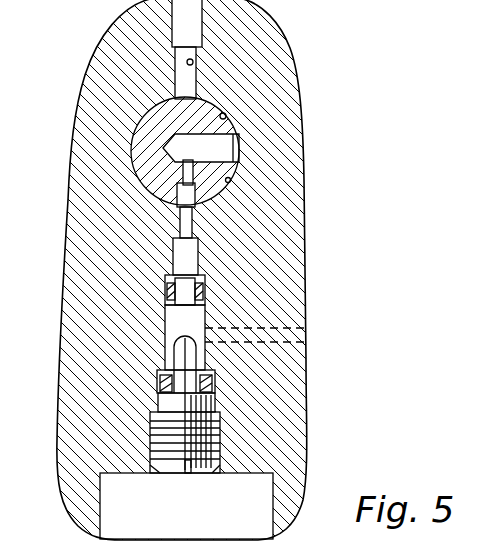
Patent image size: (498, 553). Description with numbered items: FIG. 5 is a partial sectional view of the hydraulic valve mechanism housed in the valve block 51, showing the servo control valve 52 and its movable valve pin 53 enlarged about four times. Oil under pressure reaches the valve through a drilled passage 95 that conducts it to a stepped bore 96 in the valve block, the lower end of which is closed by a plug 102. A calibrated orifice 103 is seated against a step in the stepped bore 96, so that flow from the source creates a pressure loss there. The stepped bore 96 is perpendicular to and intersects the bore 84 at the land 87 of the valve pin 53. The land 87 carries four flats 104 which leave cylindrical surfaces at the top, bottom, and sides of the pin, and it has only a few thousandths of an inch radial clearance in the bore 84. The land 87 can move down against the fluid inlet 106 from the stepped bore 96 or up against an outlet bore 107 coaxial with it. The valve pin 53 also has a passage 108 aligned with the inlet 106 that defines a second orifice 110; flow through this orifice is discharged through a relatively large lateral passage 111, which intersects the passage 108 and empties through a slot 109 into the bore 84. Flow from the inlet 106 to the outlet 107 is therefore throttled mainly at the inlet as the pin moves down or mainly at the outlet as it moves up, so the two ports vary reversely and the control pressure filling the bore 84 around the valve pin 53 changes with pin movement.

The valve block 51 is at (112, 46).
The servo control valve 52 is at (99, 135).
The valve pin 53 is at (165, 100).
The bore 84 is at (228, 118).
The land 87 is at (91, 180).
The drilled passage 95 is at (236, 335).
The stepped bore 96 is at (166, 321).
The plug 102 is at (171, 458).
The calibrated orifice 103 is at (167, 280).
The flats 104 is at (150, 111).
The fluid inlet 106 is at (178, 240).
The outlet bore 107 is at (193, 63).
The passage 108 is at (186, 222).
The slot 109 is at (236, 131).
The second orifice 110 is at (231, 180).
The lateral passage 111 is at (236, 162).